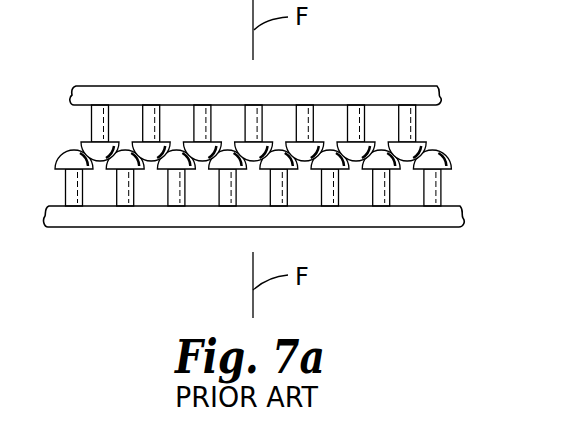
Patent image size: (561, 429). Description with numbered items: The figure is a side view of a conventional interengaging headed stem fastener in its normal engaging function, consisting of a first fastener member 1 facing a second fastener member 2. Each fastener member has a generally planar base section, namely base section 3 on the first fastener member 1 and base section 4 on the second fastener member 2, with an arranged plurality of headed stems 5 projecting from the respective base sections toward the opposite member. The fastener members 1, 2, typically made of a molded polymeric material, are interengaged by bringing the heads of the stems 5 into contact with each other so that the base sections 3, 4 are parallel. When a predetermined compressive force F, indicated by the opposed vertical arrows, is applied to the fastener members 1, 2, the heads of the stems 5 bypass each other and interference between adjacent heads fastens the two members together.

The first fastener member 1 is at (390, 82).
The second fastener member 2 is at (386, 233).
The base section 3 is at (70, 100).
The base section 4 is at (44, 212).
The headed stems 5 is at (415, 125).